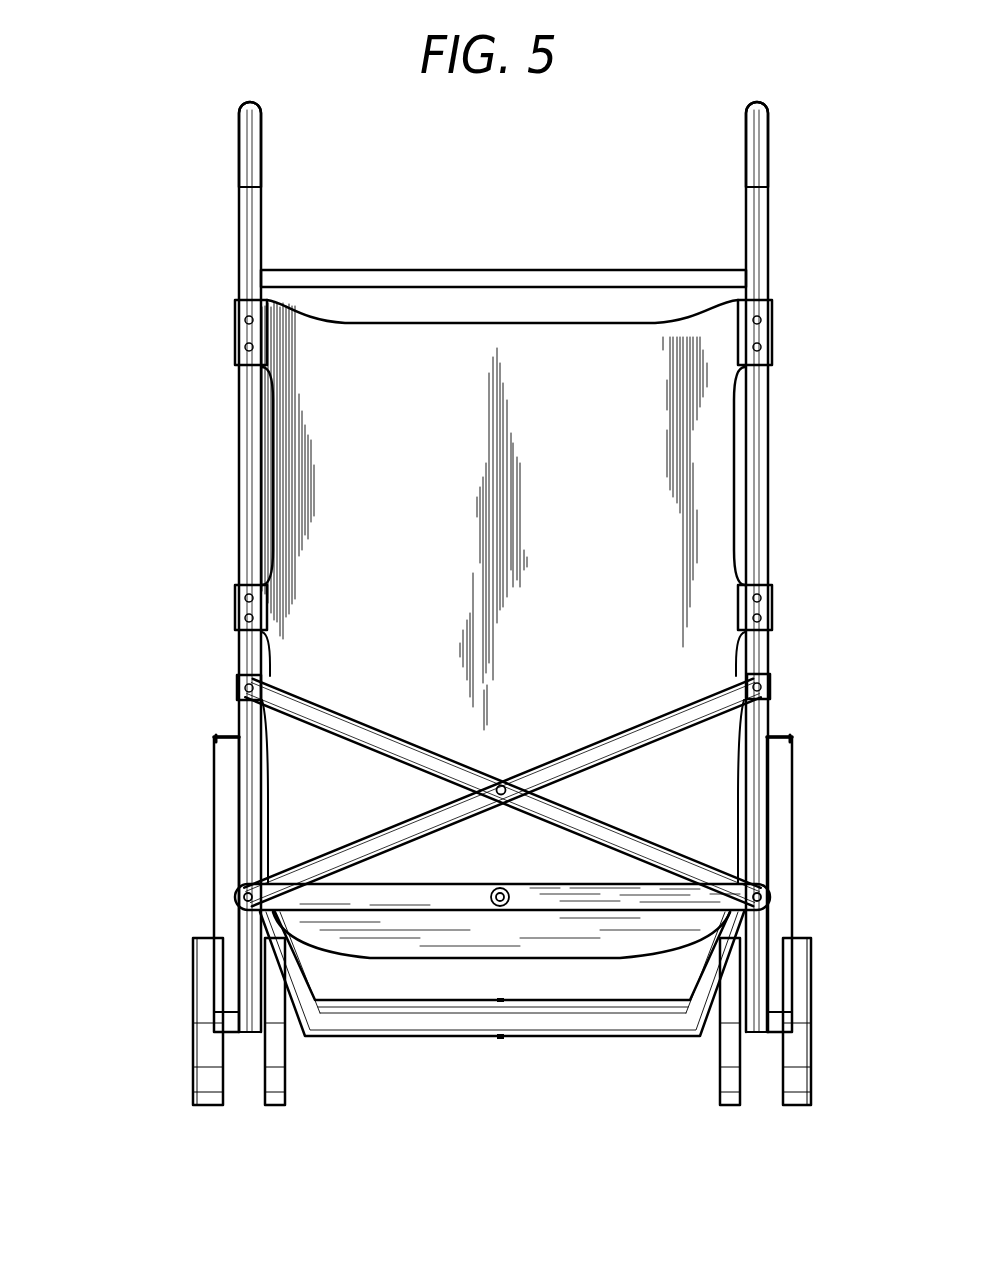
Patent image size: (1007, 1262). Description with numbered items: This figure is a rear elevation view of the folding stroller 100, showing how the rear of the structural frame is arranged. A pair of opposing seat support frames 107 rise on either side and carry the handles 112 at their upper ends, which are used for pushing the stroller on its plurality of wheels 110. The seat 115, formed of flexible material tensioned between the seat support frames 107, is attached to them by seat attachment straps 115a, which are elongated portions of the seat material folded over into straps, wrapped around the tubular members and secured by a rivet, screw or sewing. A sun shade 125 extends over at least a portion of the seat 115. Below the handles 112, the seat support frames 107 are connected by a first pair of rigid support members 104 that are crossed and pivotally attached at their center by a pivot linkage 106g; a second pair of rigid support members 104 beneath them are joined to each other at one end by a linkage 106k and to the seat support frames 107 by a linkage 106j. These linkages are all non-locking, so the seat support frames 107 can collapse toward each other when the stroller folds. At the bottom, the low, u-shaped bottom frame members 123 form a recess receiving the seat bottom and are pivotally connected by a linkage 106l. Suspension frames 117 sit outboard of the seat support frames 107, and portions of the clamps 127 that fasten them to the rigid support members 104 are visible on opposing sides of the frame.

The folding stroller 100 is at (193, 131).
The rigid support members 104 is at (313, 706).
The pivot linkage 106g is at (478, 806).
The linkage 106j is at (238, 897).
The linkage 106k is at (503, 906).
The linkage 106l is at (502, 1040).
The seat support frames 107 is at (242, 410).
The wheels 110 is at (205, 1095).
The handles 112 is at (258, 158).
The seat 115 is at (715, 440).
The seat attachment straps 115a is at (235, 338).
The suspension frames 117 is at (214, 800).
The bottom frame members 123 is at (467, 1004).
The sun shade 125 is at (458, 269).
The clamps 127 is at (222, 737).